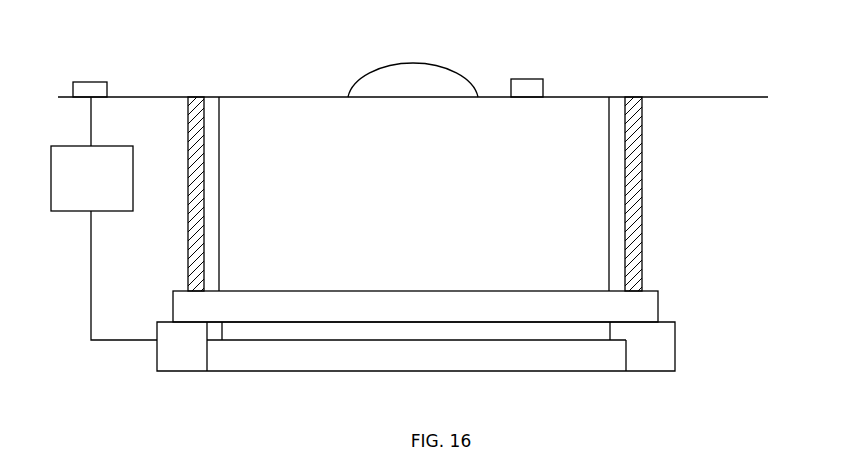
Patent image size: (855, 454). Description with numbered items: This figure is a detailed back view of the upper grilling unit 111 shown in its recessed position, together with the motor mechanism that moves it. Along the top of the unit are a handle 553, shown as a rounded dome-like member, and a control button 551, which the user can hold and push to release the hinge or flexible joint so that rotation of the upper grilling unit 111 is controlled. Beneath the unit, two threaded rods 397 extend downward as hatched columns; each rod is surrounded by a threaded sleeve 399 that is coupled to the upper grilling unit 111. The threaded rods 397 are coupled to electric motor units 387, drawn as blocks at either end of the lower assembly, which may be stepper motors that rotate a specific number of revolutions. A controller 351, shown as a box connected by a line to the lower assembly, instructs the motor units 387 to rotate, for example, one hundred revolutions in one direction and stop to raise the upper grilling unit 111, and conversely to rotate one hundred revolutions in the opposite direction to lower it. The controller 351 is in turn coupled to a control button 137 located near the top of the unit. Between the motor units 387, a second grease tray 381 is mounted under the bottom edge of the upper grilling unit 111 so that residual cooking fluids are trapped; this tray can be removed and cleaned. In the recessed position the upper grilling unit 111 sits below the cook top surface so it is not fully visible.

The upper grilling unit 111 is at (268, 82).
The control button 137 is at (99, 80).
The handle 553 is at (428, 63).
The control button 551 is at (527, 79).
The controller 351 is at (112, 187).
The threaded rods 397 is at (187, 145).
The threaded sleeves 399 is at (190, 307).
The motor units 387 is at (167, 352).
The second grease tray 381 is at (270, 355).